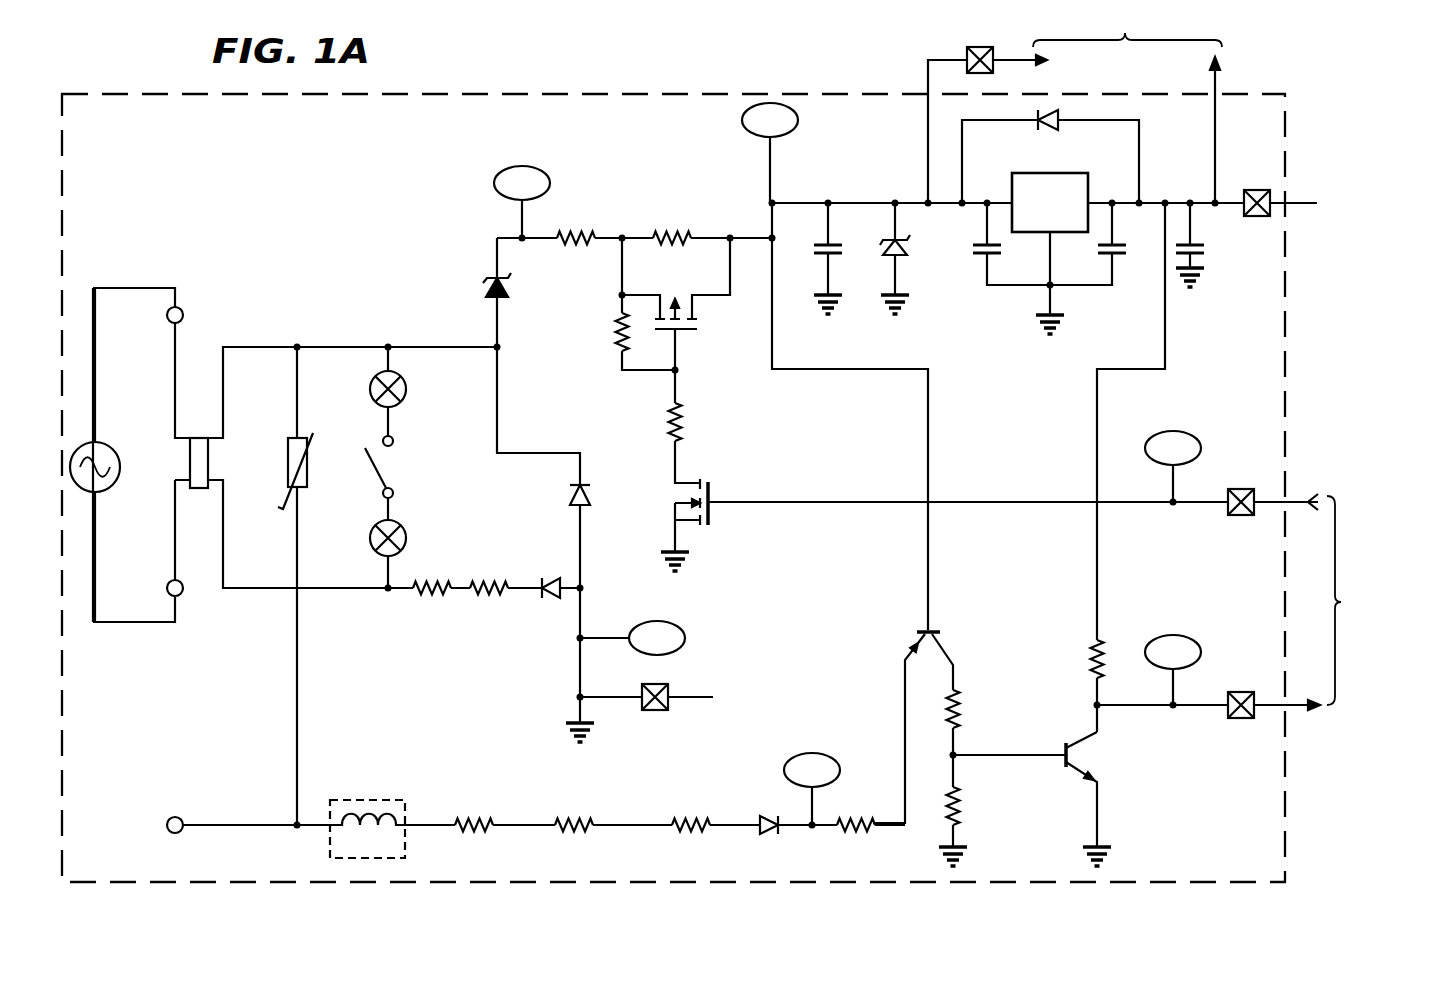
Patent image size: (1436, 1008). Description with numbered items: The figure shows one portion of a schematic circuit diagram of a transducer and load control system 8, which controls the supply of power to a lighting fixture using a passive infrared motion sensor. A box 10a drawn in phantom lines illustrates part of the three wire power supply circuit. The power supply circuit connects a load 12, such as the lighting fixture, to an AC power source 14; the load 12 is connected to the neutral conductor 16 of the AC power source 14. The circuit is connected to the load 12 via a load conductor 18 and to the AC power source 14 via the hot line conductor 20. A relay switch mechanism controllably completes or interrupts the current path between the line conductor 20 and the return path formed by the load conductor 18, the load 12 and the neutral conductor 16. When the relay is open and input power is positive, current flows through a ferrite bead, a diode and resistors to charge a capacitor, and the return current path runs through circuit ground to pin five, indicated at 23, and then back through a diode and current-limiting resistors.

The transducer and load control system 8 is at (553, 76).
The box 10a is at (705, 94).
The load 12 is at (182, 592).
The AC power source 14 is at (104, 490).
The neutral conductor 16 is at (125, 622).
The load conductor 18 is at (176, 530).
The hot line conductor 20 is at (137, 288).
The pin 5 23 is at (643, 691).